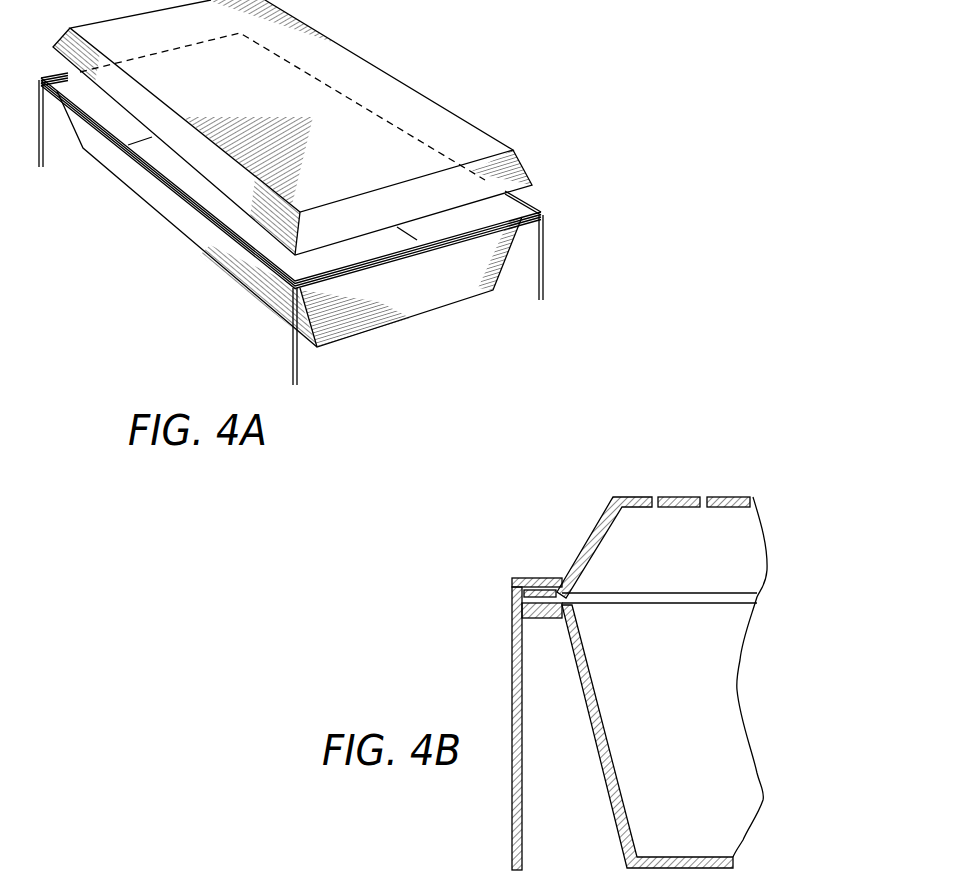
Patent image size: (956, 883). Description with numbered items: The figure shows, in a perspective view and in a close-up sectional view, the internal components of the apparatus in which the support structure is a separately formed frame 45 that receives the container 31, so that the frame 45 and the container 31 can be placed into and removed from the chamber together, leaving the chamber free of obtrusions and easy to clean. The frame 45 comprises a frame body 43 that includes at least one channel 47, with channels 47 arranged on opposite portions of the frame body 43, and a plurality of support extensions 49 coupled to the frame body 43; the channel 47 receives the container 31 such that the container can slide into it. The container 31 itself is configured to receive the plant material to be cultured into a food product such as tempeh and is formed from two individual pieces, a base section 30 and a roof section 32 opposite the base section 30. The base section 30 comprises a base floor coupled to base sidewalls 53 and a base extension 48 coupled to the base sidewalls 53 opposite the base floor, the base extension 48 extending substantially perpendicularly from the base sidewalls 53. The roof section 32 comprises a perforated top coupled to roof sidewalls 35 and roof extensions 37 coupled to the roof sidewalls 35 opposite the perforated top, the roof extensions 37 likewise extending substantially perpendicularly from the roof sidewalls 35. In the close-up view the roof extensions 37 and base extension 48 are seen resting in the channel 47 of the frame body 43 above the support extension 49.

In FIG. 4A, the base section 30 is at (437, 290).
In FIG. 4A, the container 31 is at (374, 58).
In FIG. 4B, the container 31 is at (698, 492).
In FIG. 4A, the roof section 32 is at (457, 115).
In FIG. 4B, the roof sidewalls 35 is at (590, 531).
In FIG. 4B, the roof extensions 37 is at (540, 589).
In FIG. 4A, the frame body 43 is at (221, 228).
In FIG. 4A, the frame 45 is at (128, 160).
In FIG. 4A, the channel 47 is at (541, 213).
In FIG. 4B, the channel 47 is at (522, 603).
In FIG. 4B, the base extension 48 is at (540, 608).
In FIG. 4A, the support extensions 49 is at (297, 364).
In FIG. 4B, the base sidewalls 53 is at (597, 746).